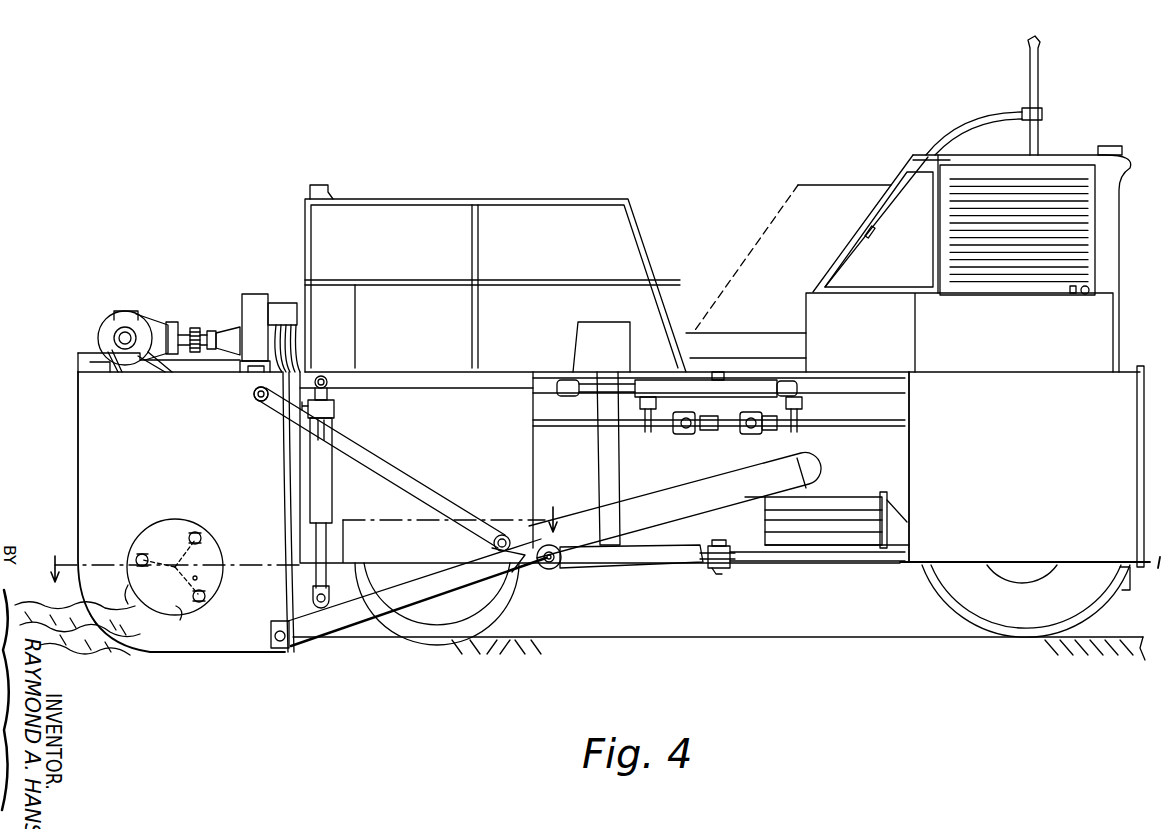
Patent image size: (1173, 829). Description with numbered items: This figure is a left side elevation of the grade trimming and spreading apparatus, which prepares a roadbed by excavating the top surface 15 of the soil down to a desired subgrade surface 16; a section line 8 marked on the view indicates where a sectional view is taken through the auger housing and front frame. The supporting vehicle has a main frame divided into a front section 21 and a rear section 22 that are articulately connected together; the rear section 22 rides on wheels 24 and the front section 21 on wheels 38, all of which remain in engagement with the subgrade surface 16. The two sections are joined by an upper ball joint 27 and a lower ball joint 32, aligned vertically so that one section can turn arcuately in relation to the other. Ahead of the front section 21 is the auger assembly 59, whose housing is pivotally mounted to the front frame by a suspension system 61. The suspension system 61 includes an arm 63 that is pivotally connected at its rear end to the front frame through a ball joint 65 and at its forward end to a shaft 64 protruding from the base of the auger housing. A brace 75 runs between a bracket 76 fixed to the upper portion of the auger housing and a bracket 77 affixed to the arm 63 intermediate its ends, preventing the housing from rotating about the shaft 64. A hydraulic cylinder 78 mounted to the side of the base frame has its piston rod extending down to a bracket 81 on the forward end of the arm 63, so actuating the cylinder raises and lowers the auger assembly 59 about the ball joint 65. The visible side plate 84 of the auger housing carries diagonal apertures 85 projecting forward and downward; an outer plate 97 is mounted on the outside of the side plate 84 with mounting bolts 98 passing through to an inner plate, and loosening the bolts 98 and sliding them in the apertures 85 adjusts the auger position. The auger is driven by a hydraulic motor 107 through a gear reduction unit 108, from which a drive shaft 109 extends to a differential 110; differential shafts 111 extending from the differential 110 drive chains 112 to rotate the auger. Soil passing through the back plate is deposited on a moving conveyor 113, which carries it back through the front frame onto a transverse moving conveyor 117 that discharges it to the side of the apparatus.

The section line 8- 8 is at (301, 535).
The top surface 15 is at (18, 604).
The subgrade surface 16 is at (815, 636).
The front section 21 is at (490, 380).
The rear section 22 is at (1136, 372).
The wheels 24 is at (1026, 601).
The ball joint 27 is at (722, 374).
The ball joint 32 is at (725, 568).
The wheels 38 is at (480, 606).
The auger assembly 59 is at (184, 337).
The suspension system 61 is at (553, 571).
The arm 63 is at (427, 598).
The shafts 64 is at (286, 652).
The ball joints 65 is at (556, 563).
The braces 75 is at (390, 470).
The brackets 76 is at (255, 400).
The brackets 77 is at (510, 590).
The hydraulic cylinders 78 is at (334, 494).
The brackets 81 is at (330, 592).
The side plate 84 is at (156, 476).
The diagonal apertures 85 is at (205, 530).
The outer plate 97 is at (175, 576).
The mounting bolts 98 is at (208, 592).
The hydraulic motor 107 is at (283, 303).
The gear reduction unit 108 is at (254, 294).
The drive shaft 109 is at (210, 330).
The differential 110 is at (100, 322).
The differential shafts 111 is at (116, 336).
The chains 112 is at (122, 384).
The moving conveyor 113 is at (620, 504).
The transverse moving conveyor 117 is at (832, 492).